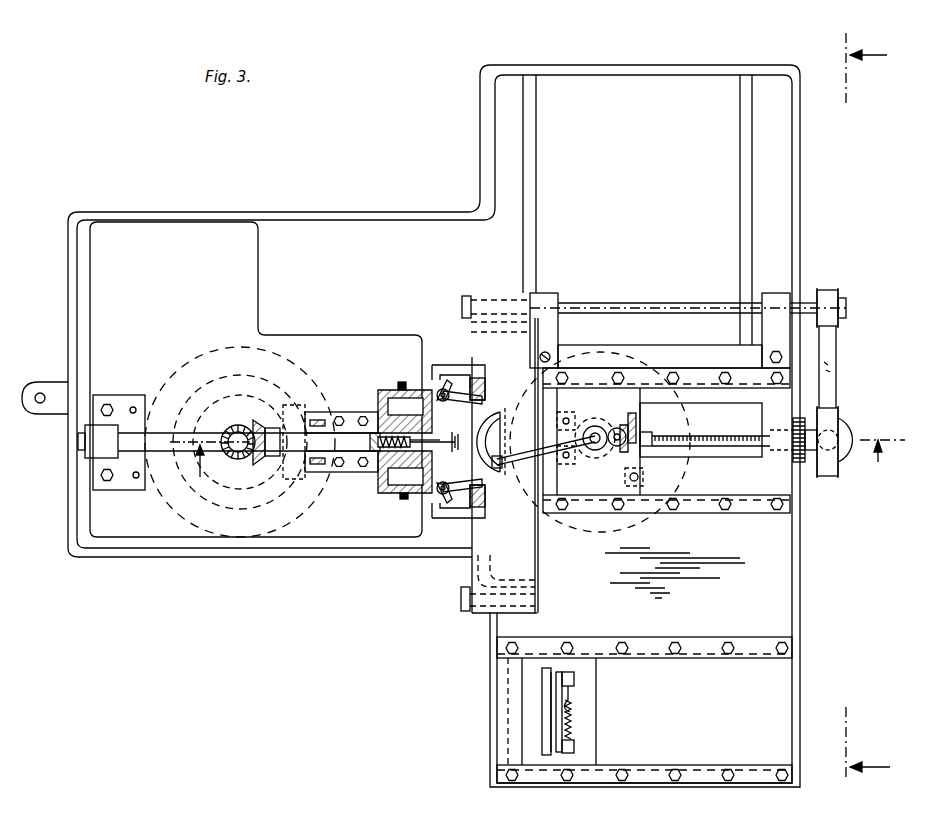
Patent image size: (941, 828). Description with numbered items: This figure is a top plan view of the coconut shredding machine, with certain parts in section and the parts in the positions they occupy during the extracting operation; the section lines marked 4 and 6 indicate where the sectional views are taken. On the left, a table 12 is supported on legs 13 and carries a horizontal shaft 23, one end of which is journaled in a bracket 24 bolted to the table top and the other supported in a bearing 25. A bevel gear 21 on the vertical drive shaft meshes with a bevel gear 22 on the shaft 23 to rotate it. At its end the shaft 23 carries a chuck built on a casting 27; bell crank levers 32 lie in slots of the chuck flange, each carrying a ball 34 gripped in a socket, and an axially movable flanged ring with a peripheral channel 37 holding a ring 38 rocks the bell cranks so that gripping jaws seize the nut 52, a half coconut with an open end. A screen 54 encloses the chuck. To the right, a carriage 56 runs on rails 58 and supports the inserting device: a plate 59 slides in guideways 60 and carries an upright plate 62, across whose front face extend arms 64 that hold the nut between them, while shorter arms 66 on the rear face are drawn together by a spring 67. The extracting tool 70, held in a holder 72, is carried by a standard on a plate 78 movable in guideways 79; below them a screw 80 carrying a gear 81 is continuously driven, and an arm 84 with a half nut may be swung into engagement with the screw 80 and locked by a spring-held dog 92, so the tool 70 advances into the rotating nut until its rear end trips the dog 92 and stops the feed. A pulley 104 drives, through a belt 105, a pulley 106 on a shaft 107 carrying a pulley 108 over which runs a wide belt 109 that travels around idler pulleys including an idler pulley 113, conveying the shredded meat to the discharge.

The section line 4- 4 is at (868, 406).
The section line 6- 6 is at (543, 460).
The table 12 is at (256, 379).
The legs 13 is at (68, 325).
The bevel gear 21 is at (232, 460).
The bevel gear 22 is at (258, 422).
The shaft 23 is at (164, 440).
The bracket 24 is at (115, 470).
The bearing 25 is at (355, 478).
The casting 27 is at (378, 400).
The bell crank lever 32 is at (445, 441).
The ball 34 is at (449, 390).
The peripheral channel 37 is at (398, 388).
The ring 38 is at (402, 382).
The nut 52 is at (500, 428).
The screen 54 is at (447, 368).
The carriage 56 is at (802, 563).
The rails 58 is at (537, 178).
The plate 59 is at (572, 694).
The guideways 60 is at (702, 640).
The upright plate 62 is at (548, 682).
The arms 64 is at (545, 695).
The shorter arms 66 is at (574, 678).
The spring 67 is at (575, 725).
The tool 70 is at (515, 472).
The holder 72 is at (594, 452).
The plate 78 is at (603, 400).
The guideways 79 is at (690, 372).
The screw 80 is at (735, 436).
The gear 81 is at (802, 418).
The arm 84 is at (640, 432).
The spring-held dog 92 is at (622, 455).
The pulley 104 is at (840, 470).
The belt 105 is at (836, 362).
The pulley 106 is at (838, 323).
The shaft 107 is at (733, 296).
The pulley 108 is at (466, 292).
The wide belt 109 is at (515, 292).
The idler pulley 113 is at (466, 620).